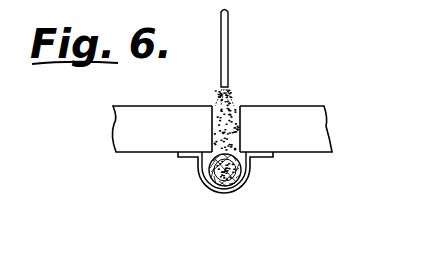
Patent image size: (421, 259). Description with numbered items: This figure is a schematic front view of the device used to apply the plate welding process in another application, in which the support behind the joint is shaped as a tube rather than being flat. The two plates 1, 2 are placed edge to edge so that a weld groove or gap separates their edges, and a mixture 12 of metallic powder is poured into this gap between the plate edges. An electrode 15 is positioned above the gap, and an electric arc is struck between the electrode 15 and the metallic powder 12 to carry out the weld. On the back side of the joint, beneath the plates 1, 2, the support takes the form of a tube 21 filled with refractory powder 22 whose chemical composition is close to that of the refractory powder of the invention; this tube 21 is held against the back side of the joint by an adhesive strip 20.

The plate 1 is at (130, 121).
The plate 2 is at (312, 142).
The electrode 15 is at (228, 33).
The mixture of metallic powder 12 is at (227, 120).
The adhesive strip 20 is at (251, 160).
The tube 21 is at (210, 178).
The refractory powder 22 is at (224, 184).